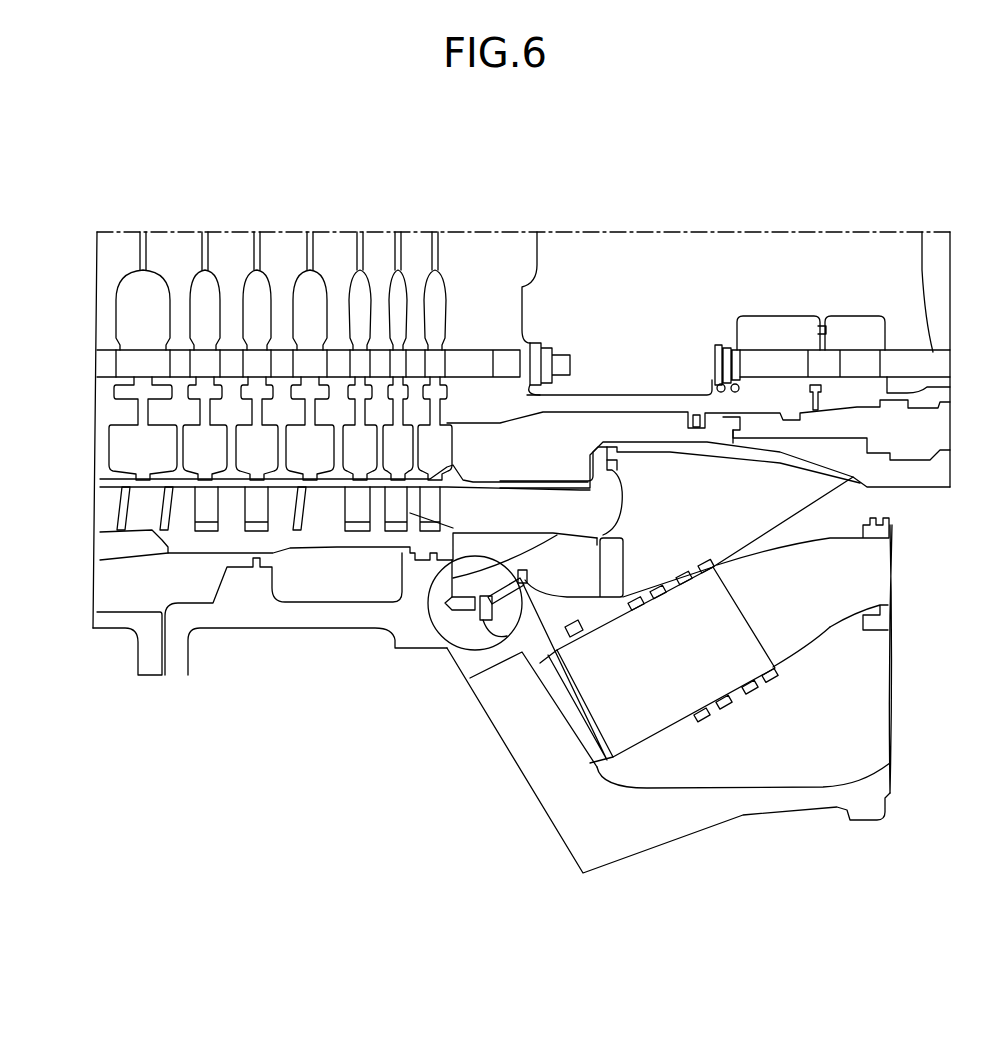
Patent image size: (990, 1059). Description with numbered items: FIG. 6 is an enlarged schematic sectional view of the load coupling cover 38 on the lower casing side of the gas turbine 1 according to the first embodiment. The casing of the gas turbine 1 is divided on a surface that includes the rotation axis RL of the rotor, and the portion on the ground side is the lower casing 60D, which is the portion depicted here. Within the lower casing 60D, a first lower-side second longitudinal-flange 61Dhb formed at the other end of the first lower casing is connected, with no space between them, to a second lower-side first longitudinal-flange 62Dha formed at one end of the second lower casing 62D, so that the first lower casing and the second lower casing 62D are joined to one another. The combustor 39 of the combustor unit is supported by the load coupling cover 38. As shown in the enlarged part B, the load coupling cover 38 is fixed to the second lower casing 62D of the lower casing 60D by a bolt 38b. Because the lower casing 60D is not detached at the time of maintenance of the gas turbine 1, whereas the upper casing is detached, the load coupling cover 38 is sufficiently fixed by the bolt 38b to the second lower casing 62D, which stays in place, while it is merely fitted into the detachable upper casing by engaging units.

The gas turbine 1 is at (886, 196).
The rotation axis RL is at (500, 236).
The load coupling cover 38 is at (653, 478).
The bolt 38b is at (472, 608).
The combustor 39 is at (766, 680).
The lower casing 60D is at (384, 800).
The first lower-side second longitudinal-flange 61Dhb is at (150, 677).
The second lower-side first longitudinal-flange 62Dha is at (175, 677).
The second lower casing 62D is at (548, 810).
The part B is at (476, 618).